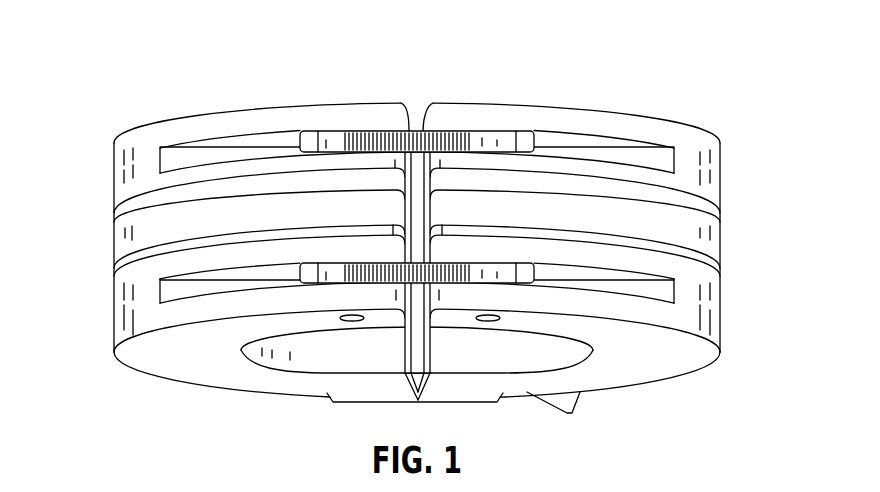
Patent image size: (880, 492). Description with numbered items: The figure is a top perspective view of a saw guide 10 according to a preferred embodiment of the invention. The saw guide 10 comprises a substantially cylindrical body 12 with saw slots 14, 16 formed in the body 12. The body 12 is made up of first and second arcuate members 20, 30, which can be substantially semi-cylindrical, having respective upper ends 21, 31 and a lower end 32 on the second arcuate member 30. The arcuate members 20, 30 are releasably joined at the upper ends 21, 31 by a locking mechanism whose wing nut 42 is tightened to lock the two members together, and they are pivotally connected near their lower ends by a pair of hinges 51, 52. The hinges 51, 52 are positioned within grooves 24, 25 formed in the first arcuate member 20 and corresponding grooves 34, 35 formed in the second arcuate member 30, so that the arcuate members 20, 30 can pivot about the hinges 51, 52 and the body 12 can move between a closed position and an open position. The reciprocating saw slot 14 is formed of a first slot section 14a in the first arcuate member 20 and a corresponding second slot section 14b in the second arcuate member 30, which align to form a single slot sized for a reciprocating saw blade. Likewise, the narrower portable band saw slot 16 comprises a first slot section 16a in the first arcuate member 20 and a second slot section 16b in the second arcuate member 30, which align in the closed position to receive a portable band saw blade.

The saw guide 10 is at (139, 98).
The body 12 is at (636, 108).
The reciprocating saw slot 14 is at (665, 122).
The first slot section 14a is at (697, 206).
The second slot section 14b is at (133, 205).
The portable band saw slot 16 is at (308, 232).
The first slot section 16a is at (700, 262).
The second slot section 16b is at (113, 258).
The first arcuate member 20 is at (710, 310).
The upper end 21 is at (430, 232).
The groove 24 is at (583, 152).
The groove 25 is at (633, 283).
The second arcuate member 30 is at (127, 238).
The upper end 31 is at (405, 218).
The lower end 32 is at (380, 403).
The groove 34 is at (232, 147).
The groove 35 is at (178, 292).
The wing nut 42 is at (572, 413).
The hinge 51 is at (416, 130).
The hinge 52 is at (337, 283).